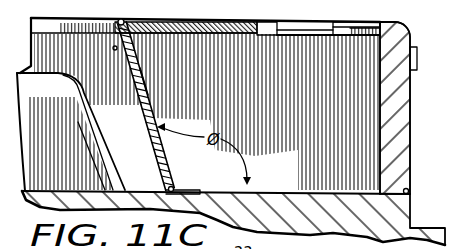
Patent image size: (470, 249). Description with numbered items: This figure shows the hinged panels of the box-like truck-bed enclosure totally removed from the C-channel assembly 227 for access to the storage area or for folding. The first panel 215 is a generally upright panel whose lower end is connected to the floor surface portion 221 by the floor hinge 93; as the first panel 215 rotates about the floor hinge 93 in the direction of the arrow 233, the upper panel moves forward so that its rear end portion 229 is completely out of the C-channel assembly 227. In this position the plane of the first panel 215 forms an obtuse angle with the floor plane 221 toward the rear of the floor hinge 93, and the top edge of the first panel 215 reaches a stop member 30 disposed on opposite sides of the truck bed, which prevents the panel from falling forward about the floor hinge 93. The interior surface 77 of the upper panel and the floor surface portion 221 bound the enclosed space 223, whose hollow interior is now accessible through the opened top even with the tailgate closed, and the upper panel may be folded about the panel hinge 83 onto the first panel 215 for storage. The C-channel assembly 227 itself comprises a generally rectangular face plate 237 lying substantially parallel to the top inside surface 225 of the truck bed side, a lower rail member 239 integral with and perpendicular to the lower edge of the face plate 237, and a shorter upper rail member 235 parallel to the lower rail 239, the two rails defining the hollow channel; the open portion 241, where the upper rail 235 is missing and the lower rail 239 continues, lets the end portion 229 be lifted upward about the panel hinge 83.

The stop member 30 is at (121, 71).
The interior surface 77 is at (225, 21).
The panel hinge 83 is at (115, 27).
The floor hinge 93 is at (166, 184).
The first panel member 215 is at (148, 131).
The floor surface portion 221 is at (314, 193).
The enclosed space 223 is at (338, 173).
The top inside surface 225 is at (257, 65).
The C-channel assembly 227 is at (317, 47).
The end portion 229 is at (255, 21).
The arrow 233 is at (192, 61).
The upper rail member 235 is at (367, 21).
The face plate 237 is at (341, 38).
The lower rail member 239 is at (336, 42).
The open portion 241 is at (313, 21).